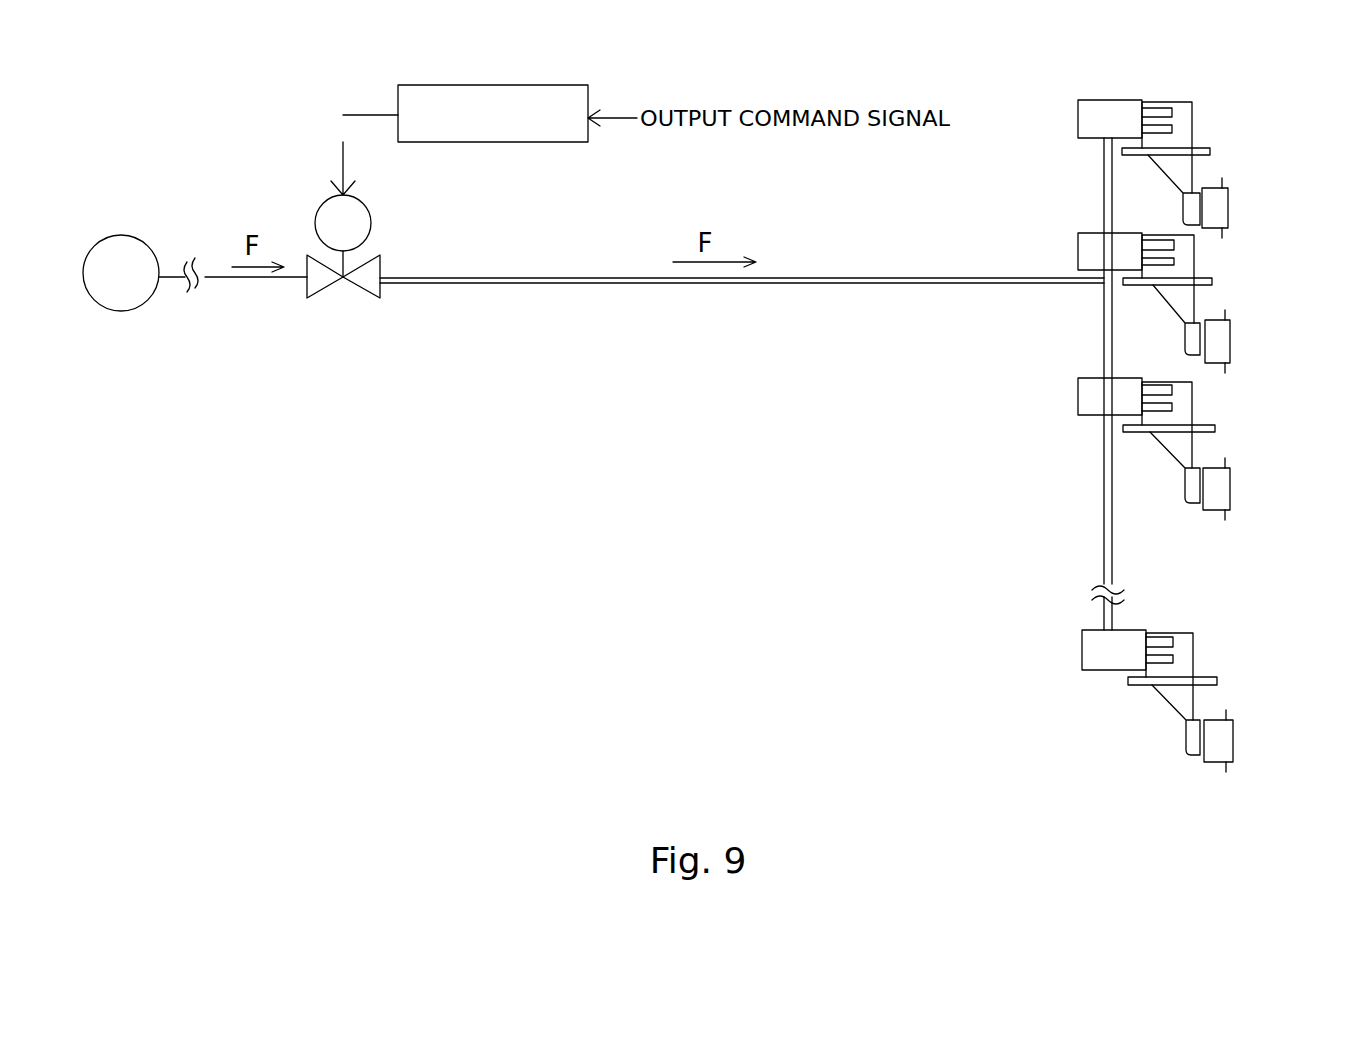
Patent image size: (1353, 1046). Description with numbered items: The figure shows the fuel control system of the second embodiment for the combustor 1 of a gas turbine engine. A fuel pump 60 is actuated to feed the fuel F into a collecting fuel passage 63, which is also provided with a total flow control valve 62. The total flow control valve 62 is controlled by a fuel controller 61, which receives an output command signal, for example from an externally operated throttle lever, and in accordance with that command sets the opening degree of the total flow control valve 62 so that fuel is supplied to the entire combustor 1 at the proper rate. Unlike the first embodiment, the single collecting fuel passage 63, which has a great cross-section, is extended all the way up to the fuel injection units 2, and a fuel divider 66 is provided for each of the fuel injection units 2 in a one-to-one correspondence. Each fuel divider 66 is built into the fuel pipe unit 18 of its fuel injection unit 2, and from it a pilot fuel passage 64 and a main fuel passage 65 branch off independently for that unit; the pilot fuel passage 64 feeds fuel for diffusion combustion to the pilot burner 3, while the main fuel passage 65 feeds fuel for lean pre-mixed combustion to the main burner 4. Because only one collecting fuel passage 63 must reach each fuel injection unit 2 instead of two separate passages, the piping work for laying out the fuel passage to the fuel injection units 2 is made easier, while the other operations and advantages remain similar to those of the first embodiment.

The combustor 1 is at (1043, 135).
The fuel injection unit 2 is at (1241, 178).
The pilot burner 3 is at (1255, 466).
The main burner 4 is at (1217, 475).
The fuel pipe unit 18 is at (1185, 108).
The fuel pump 60 is at (128, 244).
The fuel controller 61 is at (516, 96).
The total flow control valve 62 is at (370, 215).
The collecting fuel passage 63 is at (593, 283).
The pilot fuel passage 64 is at (1170, 110).
The main fuel passage 65 is at (1173, 134).
The fuel divider 66 is at (1114, 104).